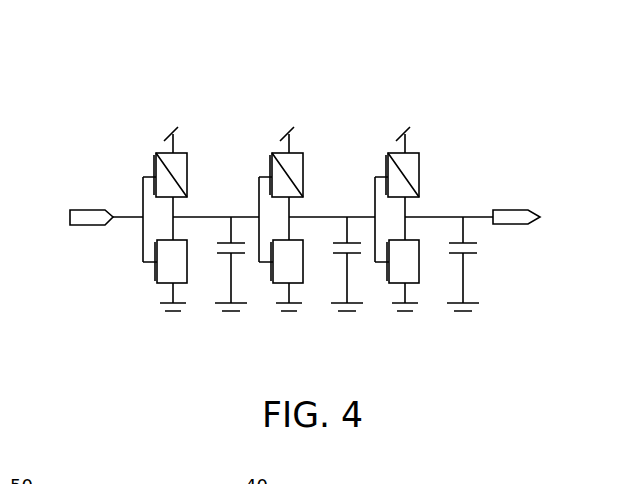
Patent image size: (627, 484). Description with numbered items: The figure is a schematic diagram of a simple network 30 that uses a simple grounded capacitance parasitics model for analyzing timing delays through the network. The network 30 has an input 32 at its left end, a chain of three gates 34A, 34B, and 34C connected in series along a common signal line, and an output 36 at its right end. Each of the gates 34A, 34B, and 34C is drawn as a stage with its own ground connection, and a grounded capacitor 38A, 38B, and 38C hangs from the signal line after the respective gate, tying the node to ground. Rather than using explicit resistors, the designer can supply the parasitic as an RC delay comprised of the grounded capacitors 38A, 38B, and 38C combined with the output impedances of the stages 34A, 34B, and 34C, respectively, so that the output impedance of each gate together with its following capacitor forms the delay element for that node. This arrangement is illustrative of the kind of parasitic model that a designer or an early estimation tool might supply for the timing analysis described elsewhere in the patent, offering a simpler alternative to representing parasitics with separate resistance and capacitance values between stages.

The network 30 is at (137, 77).
The input 32 is at (91, 216).
The gate 34A is at (187, 148).
The gate 34B is at (302, 145).
The gate 34C is at (420, 145).
The output 36 is at (515, 207).
The grounded capacitor 38A is at (217, 267).
The grounded capacitor 38B is at (335, 267).
The grounded capacitor 38C is at (452, 265).